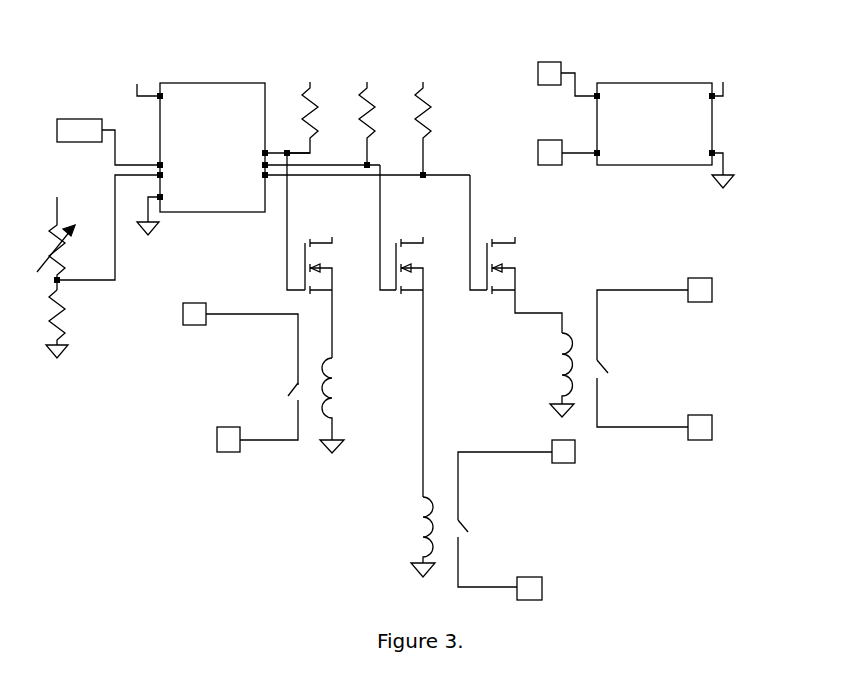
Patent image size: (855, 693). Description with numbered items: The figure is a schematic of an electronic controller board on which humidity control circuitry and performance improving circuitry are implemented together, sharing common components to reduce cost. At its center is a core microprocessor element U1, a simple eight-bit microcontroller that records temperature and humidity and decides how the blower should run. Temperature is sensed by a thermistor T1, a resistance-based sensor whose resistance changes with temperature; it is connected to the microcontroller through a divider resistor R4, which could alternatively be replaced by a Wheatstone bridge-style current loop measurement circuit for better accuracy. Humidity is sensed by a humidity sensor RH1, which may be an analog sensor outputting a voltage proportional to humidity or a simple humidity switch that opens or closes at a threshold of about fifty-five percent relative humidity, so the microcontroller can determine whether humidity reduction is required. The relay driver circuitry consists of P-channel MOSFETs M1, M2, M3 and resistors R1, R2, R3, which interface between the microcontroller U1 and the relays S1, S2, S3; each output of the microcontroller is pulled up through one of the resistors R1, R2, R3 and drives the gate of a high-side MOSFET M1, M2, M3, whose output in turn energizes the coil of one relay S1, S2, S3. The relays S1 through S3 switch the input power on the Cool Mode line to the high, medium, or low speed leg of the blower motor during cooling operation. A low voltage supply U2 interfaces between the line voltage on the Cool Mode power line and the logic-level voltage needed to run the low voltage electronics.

The microprocessor element U1 is at (199, 143).
The low voltage supply U2 is at (609, 119).
The humidity sensor RH1 is at (108, 142).
The thermistor T1 is at (98, 227).
The resistor R4 is at (70, 324).
The resistor R1 is at (315, 103).
The resistor R2 is at (381, 109).
The resistor R3 is at (437, 114).
The P-channel MOSFET M1 is at (327, 303).
The P-channel MOSFET M2 is at (419, 371).
The P-channel MOSFET M3 is at (522, 296).
The relay S1 is at (216, 377).
The relay S2 is at (535, 520).
The relay S3 is at (673, 359).